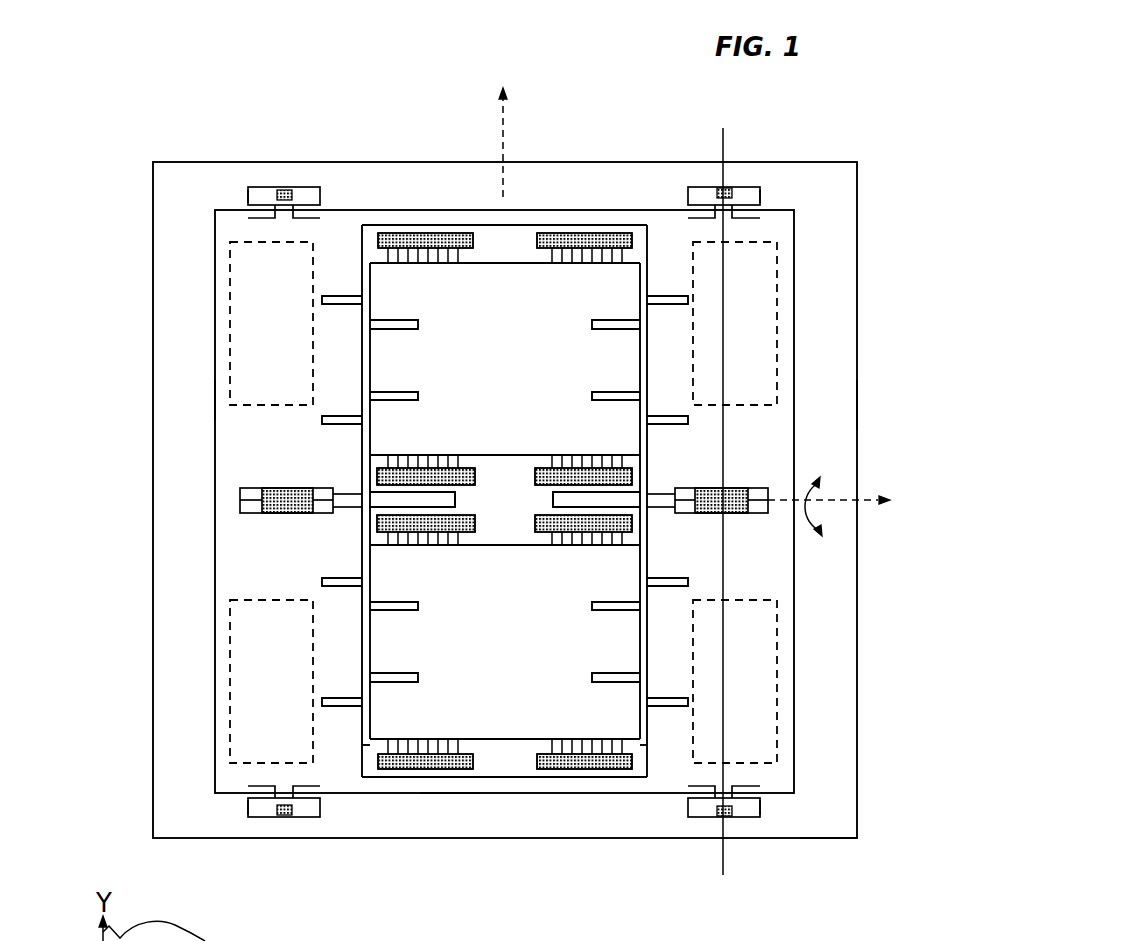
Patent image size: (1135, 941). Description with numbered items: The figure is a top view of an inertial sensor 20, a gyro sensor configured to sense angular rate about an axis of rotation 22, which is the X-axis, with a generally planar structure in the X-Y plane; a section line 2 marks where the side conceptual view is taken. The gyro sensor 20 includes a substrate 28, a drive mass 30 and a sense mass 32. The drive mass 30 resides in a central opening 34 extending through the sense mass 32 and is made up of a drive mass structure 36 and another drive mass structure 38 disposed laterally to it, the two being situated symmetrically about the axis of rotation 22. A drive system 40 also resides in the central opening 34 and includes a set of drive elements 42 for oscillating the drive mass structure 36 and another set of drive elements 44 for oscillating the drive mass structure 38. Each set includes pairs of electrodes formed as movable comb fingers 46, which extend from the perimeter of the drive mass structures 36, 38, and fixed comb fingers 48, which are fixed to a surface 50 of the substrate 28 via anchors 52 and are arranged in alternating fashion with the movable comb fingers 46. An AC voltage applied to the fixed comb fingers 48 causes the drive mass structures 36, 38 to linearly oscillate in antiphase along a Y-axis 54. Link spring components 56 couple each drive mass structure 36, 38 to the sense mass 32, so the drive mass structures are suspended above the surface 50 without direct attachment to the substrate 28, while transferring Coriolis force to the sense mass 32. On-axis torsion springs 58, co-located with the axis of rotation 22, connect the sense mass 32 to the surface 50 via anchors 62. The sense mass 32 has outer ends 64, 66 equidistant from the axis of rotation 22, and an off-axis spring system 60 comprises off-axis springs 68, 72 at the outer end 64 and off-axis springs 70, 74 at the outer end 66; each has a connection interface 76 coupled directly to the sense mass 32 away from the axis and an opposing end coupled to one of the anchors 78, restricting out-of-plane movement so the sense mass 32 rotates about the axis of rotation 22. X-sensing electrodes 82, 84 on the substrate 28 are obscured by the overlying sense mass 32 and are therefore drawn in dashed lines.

The side conceptual view section line 2 is at (723, 128).
The inertial sensor 20 is at (849, 889).
The axis of rotation 22 is at (838, 500).
The substrate 28 is at (857, 408).
The drive mass 30 is at (356, 445).
The sense mass 32 is at (214, 399).
The central opening 34 is at (497, 236).
The drive mass structure 36 is at (516, 371).
The drive mass structure 38 is at (516, 660).
The drive system 40 is at (419, 224).
The drive elements 42 is at (368, 254).
The drive elements 44 is at (533, 541).
The movable comb fingers 46 is at (452, 262).
The fixed comb fingers 48 is at (478, 248).
The surface 50 is at (196, 349).
The anchors 52 is at (392, 233).
The Y-axis 54 is at (505, 108).
The link spring components 56 is at (368, 356).
The on-axis torsion springs 58 is at (240, 492).
The off-axis spring system 60 is at (262, 168).
The anchors 62 is at (268, 513).
The outer end 64 is at (328, 208).
The outer end 66 is at (447, 795).
The off-axis spring 68 is at (248, 196).
The off-axis spring 70 is at (248, 808).
The off-axis spring 72 is at (761, 191).
The off-axis spring 74 is at (760, 808).
The connection interface 76 is at (260, 221).
The anchors 78 is at (284, 188).
The X-sensing electrode 82 is at (230, 262).
The X-sensing electrode 84 is at (230, 622).